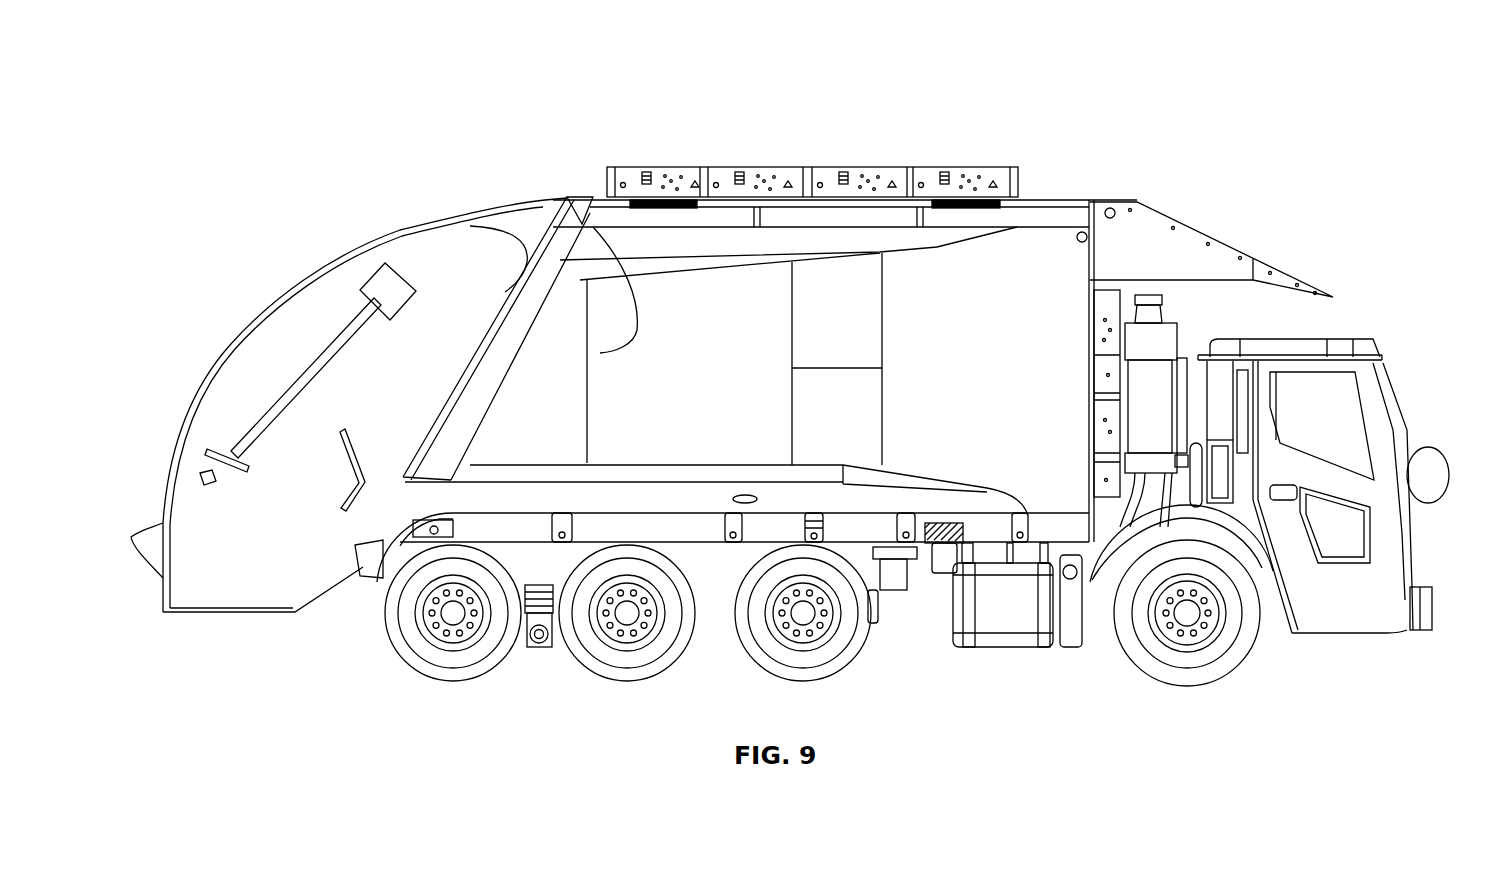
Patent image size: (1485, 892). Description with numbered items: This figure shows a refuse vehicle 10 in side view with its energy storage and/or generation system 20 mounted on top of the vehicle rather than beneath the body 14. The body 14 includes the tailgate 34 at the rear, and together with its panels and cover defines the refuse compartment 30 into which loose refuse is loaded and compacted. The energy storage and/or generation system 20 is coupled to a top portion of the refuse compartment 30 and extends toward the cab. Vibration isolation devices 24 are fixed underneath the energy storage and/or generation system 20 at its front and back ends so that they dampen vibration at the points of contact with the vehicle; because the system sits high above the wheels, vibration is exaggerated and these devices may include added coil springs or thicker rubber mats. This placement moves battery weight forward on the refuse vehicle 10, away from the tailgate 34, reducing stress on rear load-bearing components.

The refuse vehicle 10 is at (1366, 212).
The body 14 is at (1055, 200).
The energy storage and/or generation system 20 is at (768, 175).
The vibration isolation devices 24 is at (677, 197).
The refuse compartment 30 is at (572, 205).
The tailgate 34 is at (213, 410).